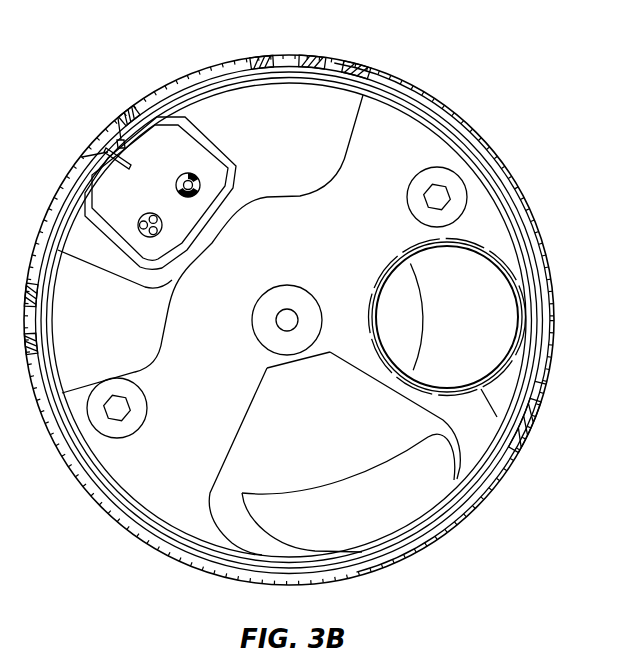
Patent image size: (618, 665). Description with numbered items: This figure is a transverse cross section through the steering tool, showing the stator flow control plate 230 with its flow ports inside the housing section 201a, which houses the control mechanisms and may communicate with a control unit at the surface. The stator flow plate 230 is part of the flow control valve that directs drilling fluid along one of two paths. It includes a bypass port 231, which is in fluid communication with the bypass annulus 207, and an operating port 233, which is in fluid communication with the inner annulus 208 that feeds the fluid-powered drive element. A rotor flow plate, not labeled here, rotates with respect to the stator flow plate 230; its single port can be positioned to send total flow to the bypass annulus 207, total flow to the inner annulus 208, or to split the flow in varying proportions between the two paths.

The housing section 201a is at (399, 67).
The bypass annulus 207 is at (394, 493).
The inner annulus 208 is at (406, 328).
The stator flow plate 230 is at (127, 458).
The bypass port 231 is at (310, 392).
The operating port 233 is at (483, 390).